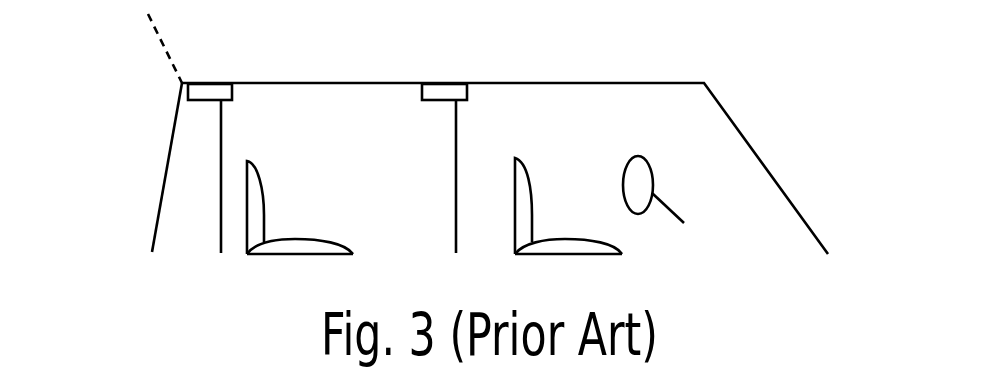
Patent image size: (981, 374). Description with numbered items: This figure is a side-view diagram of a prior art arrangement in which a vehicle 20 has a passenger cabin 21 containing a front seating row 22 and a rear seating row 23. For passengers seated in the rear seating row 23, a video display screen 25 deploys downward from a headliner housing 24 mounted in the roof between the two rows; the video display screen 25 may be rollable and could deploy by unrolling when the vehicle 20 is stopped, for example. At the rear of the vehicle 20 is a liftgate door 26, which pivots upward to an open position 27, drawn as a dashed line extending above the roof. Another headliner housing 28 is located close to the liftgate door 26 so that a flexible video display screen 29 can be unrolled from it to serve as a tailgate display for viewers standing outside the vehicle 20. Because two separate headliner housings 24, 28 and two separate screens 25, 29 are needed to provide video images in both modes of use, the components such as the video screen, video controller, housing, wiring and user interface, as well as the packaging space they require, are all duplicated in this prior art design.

The vehicle 20 is at (671, 60).
The passenger cabin 21 is at (553, 115).
The front seating row 22 is at (597, 255).
The rear seating row 23 is at (310, 245).
The headliner housing 24 is at (453, 83).
The video display screen 25 is at (455, 147).
The liftgate door 26 is at (157, 221).
The open position 27 is at (160, 42).
The headliner housing 28 is at (210, 83).
The flexible video display screen 29 is at (222, 126).